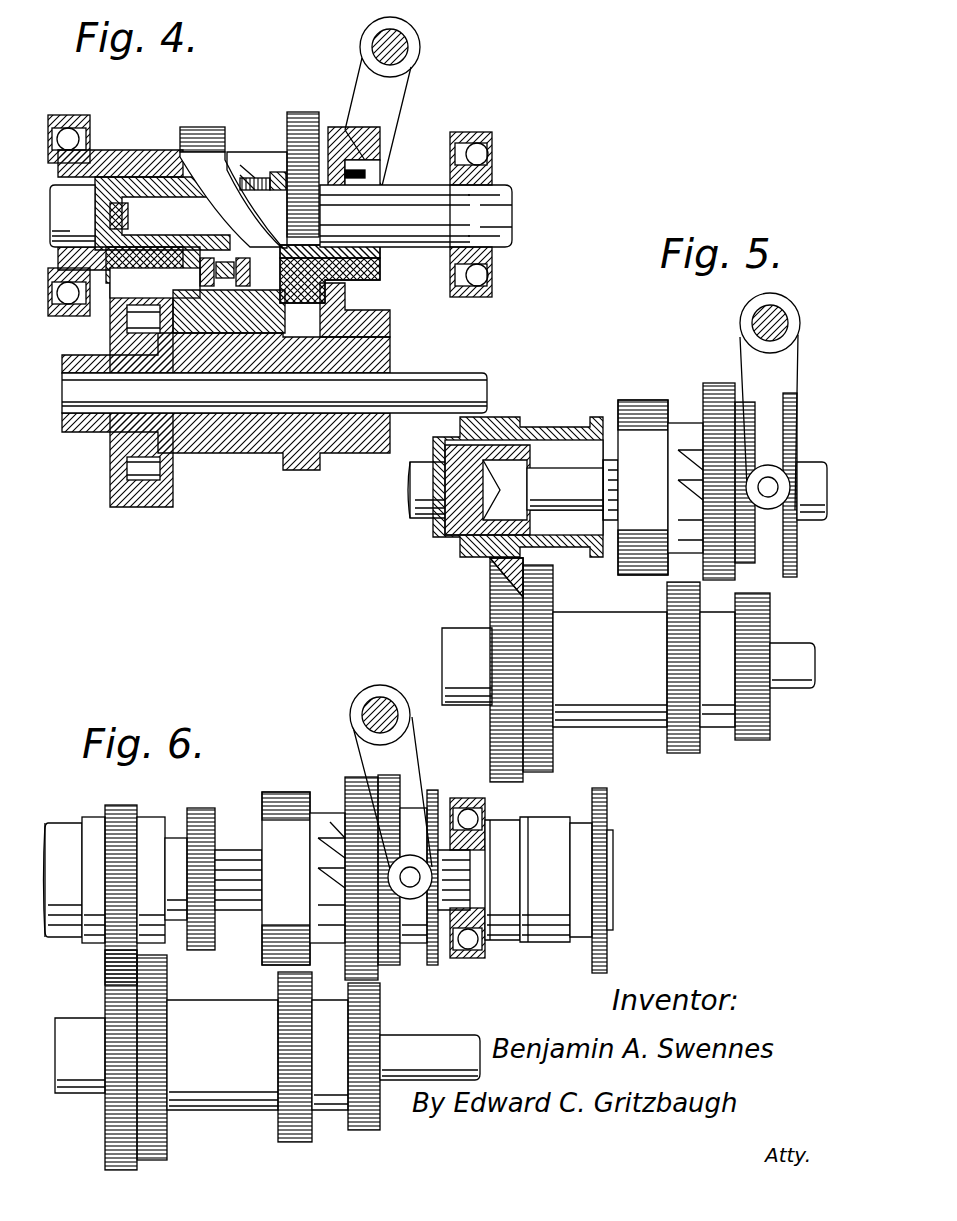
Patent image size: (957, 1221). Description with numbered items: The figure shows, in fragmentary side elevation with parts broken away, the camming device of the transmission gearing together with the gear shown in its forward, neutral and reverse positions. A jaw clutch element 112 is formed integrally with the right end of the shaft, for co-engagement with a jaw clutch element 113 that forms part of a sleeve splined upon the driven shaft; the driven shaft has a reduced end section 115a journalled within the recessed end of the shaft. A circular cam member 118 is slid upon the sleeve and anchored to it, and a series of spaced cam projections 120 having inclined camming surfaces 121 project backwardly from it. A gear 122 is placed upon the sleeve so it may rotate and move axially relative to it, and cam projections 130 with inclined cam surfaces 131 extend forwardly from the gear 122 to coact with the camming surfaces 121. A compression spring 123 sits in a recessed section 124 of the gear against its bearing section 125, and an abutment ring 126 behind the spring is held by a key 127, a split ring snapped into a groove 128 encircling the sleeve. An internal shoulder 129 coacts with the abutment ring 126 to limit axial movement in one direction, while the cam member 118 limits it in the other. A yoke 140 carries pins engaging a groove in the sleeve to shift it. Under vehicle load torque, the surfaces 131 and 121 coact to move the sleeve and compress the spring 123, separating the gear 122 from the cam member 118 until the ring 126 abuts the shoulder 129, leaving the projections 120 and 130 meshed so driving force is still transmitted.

In FIG. 5, the jaw clutch element 112 is at (576, 438).
In FIG. 5, the jaw clutch element 113 is at (636, 402).
In FIG. 5, the end section 115a is at (565, 489).
In FIG. 4, the circular cam member 118 is at (232, 168).
In FIG. 6, the circular cam member 118 is at (315, 846).
In FIG. 4, the cam projections 120 is at (246, 168).
In FIG. 5, the cam projections 120 is at (685, 448).
In FIG. 6, the cam projections 120 is at (325, 852).
In FIG. 4, the inclined camming surfaces 121 is at (238, 166).
In FIG. 4, the gear 122 is at (304, 112).
In FIG. 5, the gear 122 is at (718, 395).
In FIG. 4, the compression spring 123 is at (285, 278).
In FIG. 4, the recessed section 124 is at (290, 283).
In FIG. 4, the bearing section 125 is at (290, 270).
In FIG. 4, the abutment ring 126 is at (350, 285).
In FIG. 4, the key 127 is at (345, 262).
In FIG. 4, the groove 128 is at (352, 185).
In FIG. 4, the internal shoulder 129 is at (342, 298).
In FIG. 4, the cam projections 130 is at (260, 178).
In FIG. 6, the cam projections 130 is at (332, 820).
In FIG. 4, the inclined cam surfaces 131 is at (276, 172).
In FIG. 4, the yoke 140 is at (386, 104).
In FIG. 5, the yoke 140 is at (790, 385).
In FIG. 6, the yoke 140 is at (403, 765).